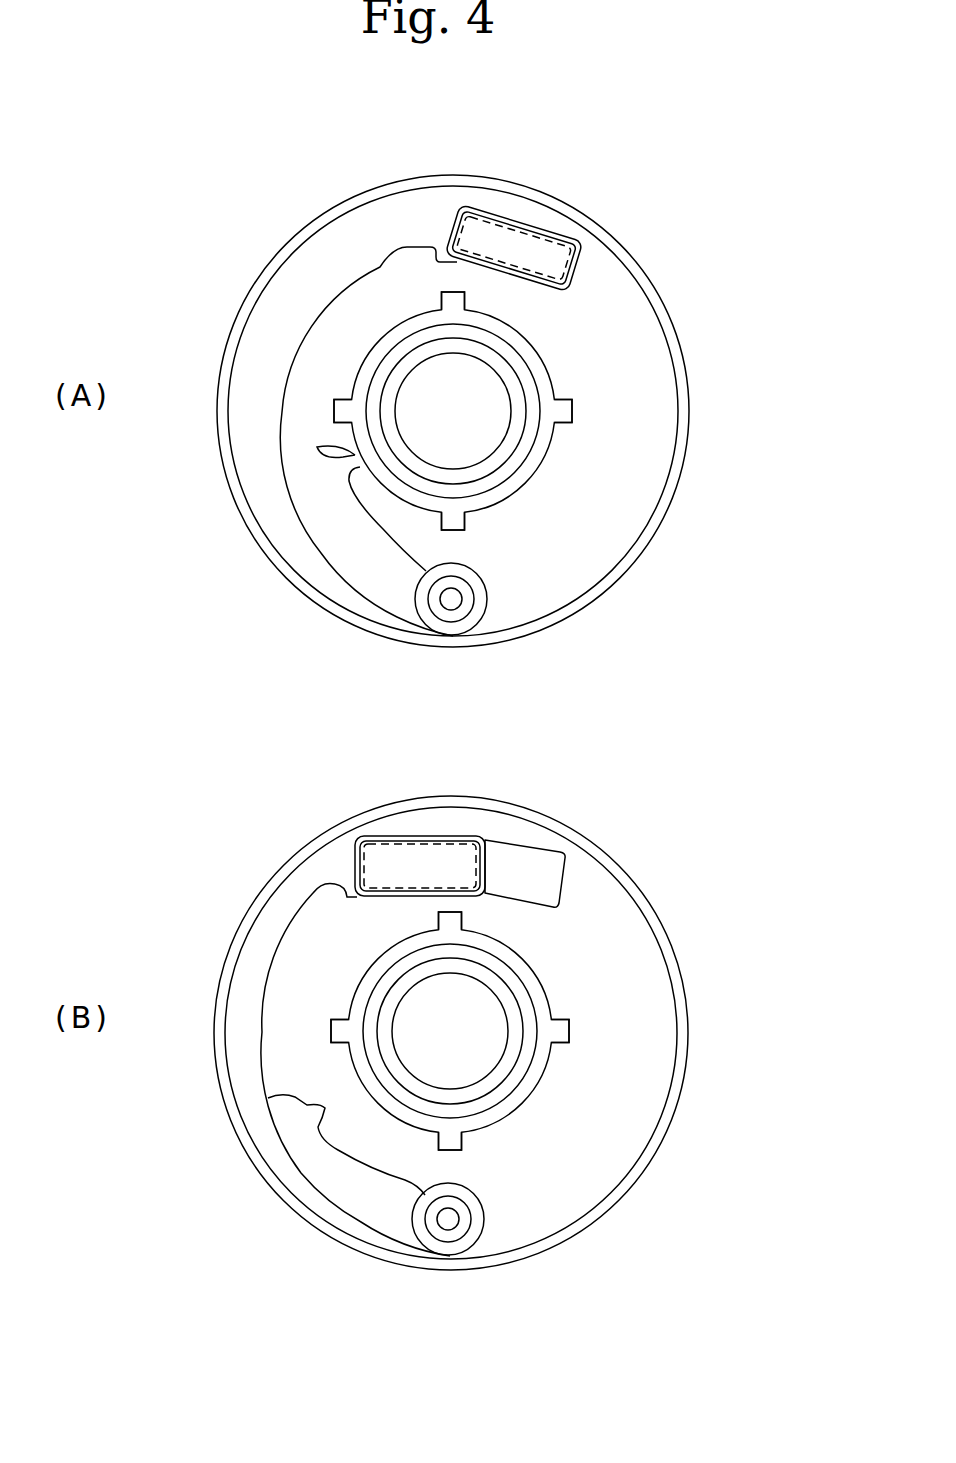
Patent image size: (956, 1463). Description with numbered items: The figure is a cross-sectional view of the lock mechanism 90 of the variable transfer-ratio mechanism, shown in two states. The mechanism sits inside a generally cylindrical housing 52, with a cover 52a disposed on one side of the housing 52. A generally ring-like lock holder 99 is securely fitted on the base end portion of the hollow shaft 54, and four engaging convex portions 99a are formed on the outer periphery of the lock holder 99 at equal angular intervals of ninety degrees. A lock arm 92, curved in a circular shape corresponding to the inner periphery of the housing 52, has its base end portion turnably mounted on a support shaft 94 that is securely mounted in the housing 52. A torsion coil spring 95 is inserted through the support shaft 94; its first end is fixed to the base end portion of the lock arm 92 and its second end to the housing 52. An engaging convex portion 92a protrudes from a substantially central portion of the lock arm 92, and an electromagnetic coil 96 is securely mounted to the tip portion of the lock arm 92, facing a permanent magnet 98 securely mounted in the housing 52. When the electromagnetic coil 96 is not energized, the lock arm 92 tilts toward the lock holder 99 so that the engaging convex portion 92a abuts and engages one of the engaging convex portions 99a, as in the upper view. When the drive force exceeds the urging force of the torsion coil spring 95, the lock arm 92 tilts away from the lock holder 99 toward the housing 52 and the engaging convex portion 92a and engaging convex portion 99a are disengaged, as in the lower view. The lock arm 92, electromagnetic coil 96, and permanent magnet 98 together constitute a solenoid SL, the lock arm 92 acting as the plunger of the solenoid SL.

The housing 52 is at (489, 722).
The cover 52a is at (549, 774).
The hollow shaft 54 is at (560, 721).
The lock mechanism 90 is at (451, 686).
The lock arm 92 is at (341, 751).
The engaging convex portion 92a is at (280, 820).
The support shaft 94 is at (449, 952).
The torsion coil spring 95 is at (489, 933).
The electromagnetic coil 96 is at (469, 504).
The permanent magnet 98 is at (523, 506).
The lock holder 99 is at (397, 658).
The engaging convex portions 99a is at (454, 699).
The solenoid SL is at (608, 630).